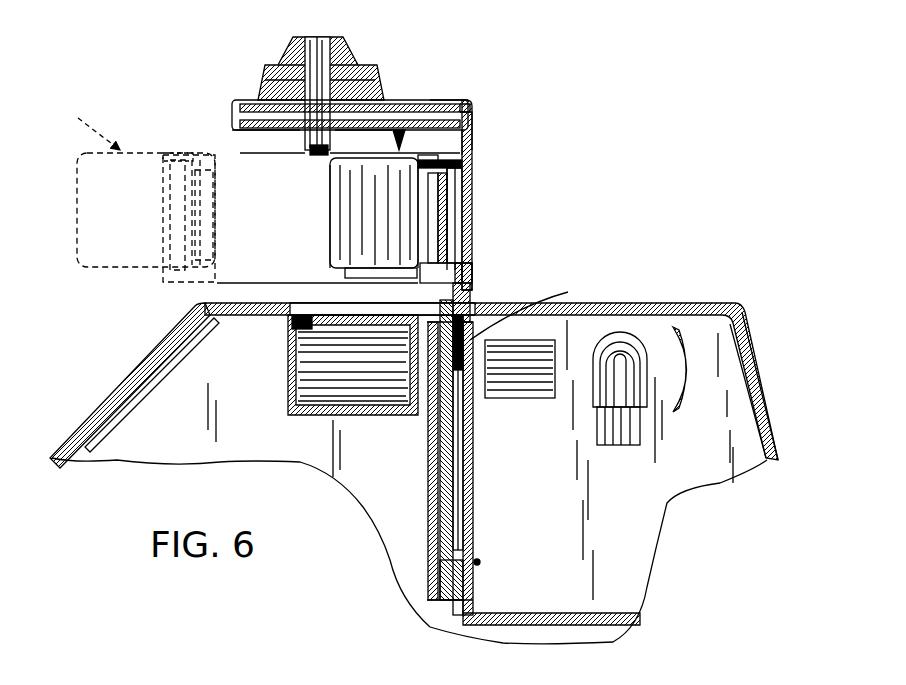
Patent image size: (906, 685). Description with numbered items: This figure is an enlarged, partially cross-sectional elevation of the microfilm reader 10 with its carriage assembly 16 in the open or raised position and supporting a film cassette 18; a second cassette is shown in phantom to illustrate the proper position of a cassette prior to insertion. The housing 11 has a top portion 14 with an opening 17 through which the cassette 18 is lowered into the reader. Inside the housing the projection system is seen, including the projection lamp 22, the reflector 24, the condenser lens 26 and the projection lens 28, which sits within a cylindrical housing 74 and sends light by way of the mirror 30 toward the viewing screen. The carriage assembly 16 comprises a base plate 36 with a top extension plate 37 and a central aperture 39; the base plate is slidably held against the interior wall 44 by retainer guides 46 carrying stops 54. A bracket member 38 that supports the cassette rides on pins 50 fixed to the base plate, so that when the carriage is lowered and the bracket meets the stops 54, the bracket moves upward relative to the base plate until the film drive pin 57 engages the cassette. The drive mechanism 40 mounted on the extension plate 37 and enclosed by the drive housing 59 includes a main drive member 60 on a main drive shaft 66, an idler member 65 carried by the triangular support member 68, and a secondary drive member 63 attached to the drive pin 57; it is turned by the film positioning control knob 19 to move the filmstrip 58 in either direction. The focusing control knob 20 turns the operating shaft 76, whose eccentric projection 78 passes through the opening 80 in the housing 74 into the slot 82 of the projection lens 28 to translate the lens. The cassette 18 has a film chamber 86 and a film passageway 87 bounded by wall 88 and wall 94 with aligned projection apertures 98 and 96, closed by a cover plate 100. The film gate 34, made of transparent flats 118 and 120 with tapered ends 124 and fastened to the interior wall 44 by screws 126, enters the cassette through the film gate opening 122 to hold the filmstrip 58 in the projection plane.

The microfilm reader 10 is at (690, 290).
The housing 11 is at (760, 388).
The top portion 14 is at (227, 318).
The carriage assembly 16 is at (466, 95).
The opening 17 is at (312, 306).
The film cassette 18 is at (325, 243).
The film positioning control knob 19 is at (362, 70).
The focusing control knob 20 is at (335, 37).
The projection lamp 22 is at (597, 430).
The reflector 24 is at (687, 403).
The condenser lens 26 is at (527, 385).
The projection lens 28 is at (293, 378).
The mirror 30 is at (98, 432).
The film gate 34 is at (422, 432).
The base plate 36 is at (472, 122).
The top extension plate 37 is at (245, 132).
The bracket member 38 is at (355, 290).
The central aperture 39 is at (470, 144).
The drive mechanism 40 is at (228, 117).
The interior wall 44 is at (598, 620).
The retainer guides 46 is at (438, 495).
The pins 50 is at (470, 303).
The stops 54 is at (460, 520).
The film drive pin 57 is at (402, 140).
The filmstrip 58 is at (447, 217).
The drive housing 59 is at (447, 100).
The main drive member 60 is at (276, 96).
The secondary drive member 63 is at (470, 108).
The idler member 65 is at (432, 102).
The main drive shaft 66 is at (268, 67).
The support member 68 is at (363, 142).
The cylindrical housing 74 is at (320, 412).
The operating shaft 76 is at (320, 43).
The eccentric projection 78 is at (320, 157).
The opening 80 is at (300, 326).
The slot 82 is at (300, 352).
The film chamber 86 is at (340, 228).
The film passageway 87 is at (456, 200).
The wall 88 is at (422, 168).
The wall 94 is at (470, 268).
The projection aperture 96 is at (473, 190).
The projection aperture 98 is at (427, 173).
The cover plate 100 is at (463, 155).
The transparent flat 118 is at (452, 498).
The transparent flat 120 is at (428, 462).
The film gate opening 122 is at (455, 270).
The rounded or tapered ends 124 is at (443, 316).
The screws 126 is at (480, 562).